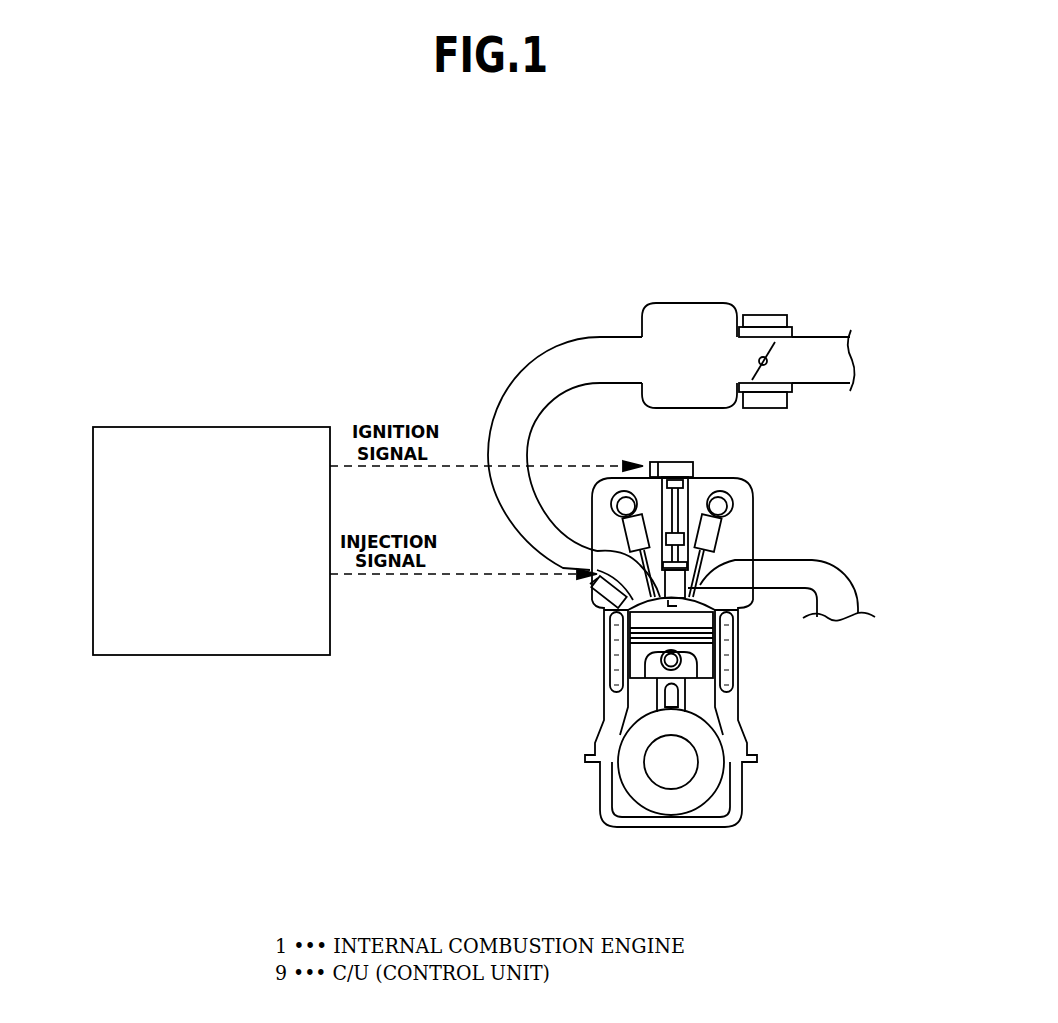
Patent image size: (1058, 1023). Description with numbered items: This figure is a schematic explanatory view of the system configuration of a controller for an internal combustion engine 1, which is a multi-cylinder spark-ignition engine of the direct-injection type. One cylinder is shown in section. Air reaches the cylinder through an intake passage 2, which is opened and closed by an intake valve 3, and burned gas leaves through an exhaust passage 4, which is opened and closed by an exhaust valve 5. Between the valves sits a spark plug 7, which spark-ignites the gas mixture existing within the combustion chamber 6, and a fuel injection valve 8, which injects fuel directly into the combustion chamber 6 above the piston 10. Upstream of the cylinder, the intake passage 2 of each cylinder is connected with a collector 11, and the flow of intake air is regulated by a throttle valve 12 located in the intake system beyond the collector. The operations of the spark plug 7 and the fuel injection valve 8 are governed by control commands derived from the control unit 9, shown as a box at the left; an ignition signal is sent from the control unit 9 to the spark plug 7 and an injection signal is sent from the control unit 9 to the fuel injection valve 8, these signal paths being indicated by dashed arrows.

The internal combustion engine 1 is at (778, 698).
The intake passage 2 is at (540, 388).
The intake valve 3 is at (587, 568).
The exhaust passage 4 is at (820, 573).
The exhaust valve 5 is at (715, 558).
The combustion chamber 6 is at (707, 620).
The spark plug 7 is at (680, 465).
The fuel injection valve 8 is at (597, 598).
The control unit 9 is at (215, 447).
The piston 10 is at (705, 658).
The collector 11 is at (687, 322).
The throttle valve 12 is at (777, 352).